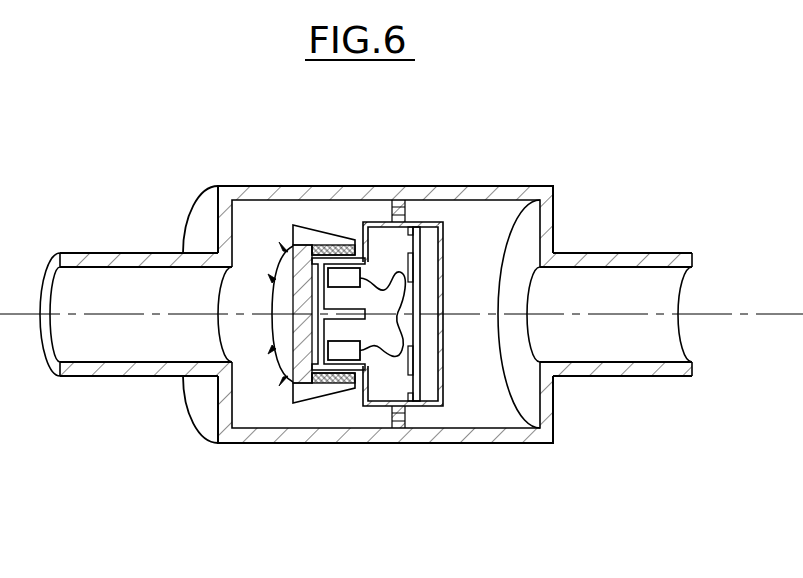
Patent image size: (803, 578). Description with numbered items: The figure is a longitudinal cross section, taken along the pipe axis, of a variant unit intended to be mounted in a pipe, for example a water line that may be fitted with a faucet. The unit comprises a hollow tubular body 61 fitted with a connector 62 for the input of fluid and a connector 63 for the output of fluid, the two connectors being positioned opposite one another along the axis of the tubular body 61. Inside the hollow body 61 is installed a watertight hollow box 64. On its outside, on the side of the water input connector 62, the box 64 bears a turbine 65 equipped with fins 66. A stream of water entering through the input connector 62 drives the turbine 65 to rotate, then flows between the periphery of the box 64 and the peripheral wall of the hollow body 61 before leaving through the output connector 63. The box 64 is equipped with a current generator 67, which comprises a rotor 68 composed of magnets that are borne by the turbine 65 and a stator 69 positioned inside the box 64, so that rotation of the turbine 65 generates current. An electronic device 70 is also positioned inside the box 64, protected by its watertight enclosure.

The hollow tubular body 61 is at (362, 445).
The connector for the input of fluid 62 is at (135, 253).
The connector for the output of fluid 63 is at (618, 254).
The watertight hollow box 64 is at (355, 390).
The turbine 65 is at (283, 350).
The fins 66 is at (291, 393).
The current generator 67 is at (378, 264).
The rotor 68 is at (330, 376).
The stator 69 is at (361, 350).
The electronic device 70 is at (422, 264).